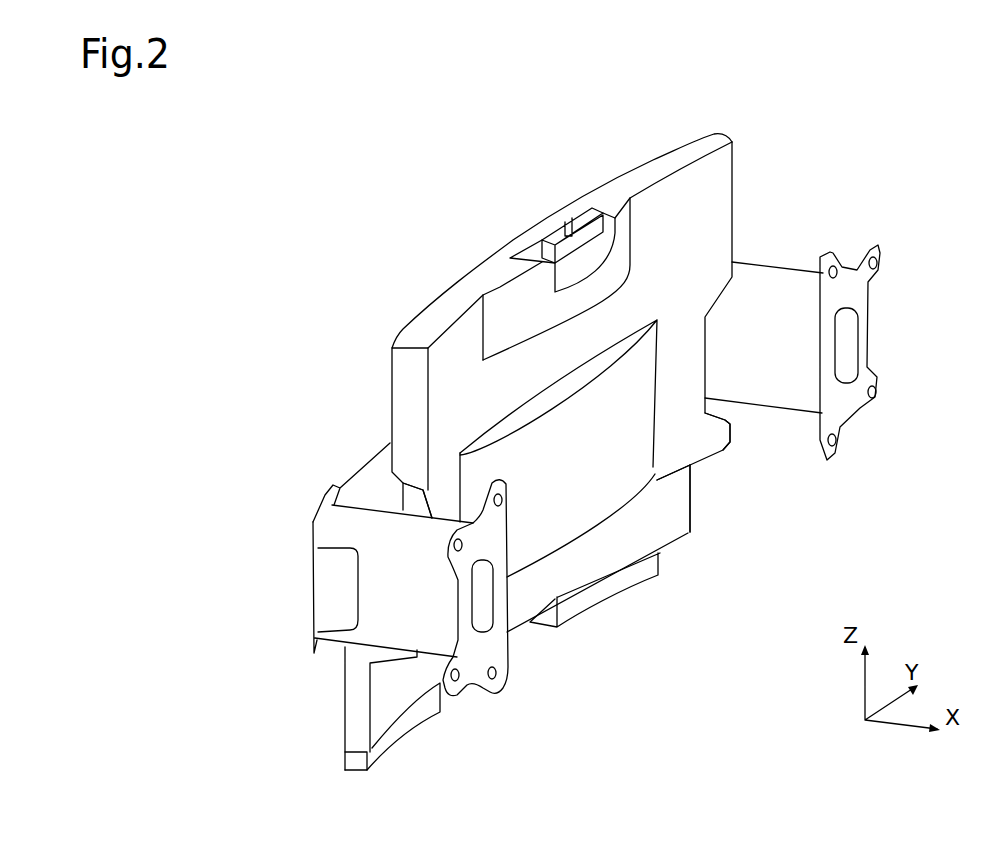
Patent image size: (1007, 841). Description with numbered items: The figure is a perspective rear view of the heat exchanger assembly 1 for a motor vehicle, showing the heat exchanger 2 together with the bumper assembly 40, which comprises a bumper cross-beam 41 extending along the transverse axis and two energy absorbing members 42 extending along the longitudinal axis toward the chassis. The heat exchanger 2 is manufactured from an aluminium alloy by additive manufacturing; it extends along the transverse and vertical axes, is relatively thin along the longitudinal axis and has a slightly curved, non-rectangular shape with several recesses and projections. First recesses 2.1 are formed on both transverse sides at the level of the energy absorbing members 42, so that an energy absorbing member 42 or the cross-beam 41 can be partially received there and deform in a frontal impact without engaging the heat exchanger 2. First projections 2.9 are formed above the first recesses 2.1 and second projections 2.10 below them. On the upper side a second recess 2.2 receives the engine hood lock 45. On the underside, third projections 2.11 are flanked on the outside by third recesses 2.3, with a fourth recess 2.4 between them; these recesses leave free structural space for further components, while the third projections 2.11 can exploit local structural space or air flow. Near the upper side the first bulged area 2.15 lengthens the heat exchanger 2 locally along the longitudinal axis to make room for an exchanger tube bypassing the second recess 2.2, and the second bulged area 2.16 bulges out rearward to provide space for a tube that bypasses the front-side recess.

The heat exchanger assembly 1 is at (828, 167).
The heat exchanger 2 is at (653, 160).
The first recess 2.1 is at (727, 340).
The second recess 2.2 is at (533, 250).
The third recess 2.3 is at (668, 556).
The fourth recess 2.4 is at (515, 650).
The first projection 2.9 is at (380, 385).
The second projection 2.10 is at (730, 461).
The third projection 2.11 is at (585, 612).
The first bulged area 2.15 is at (630, 260).
The second bulged area 2.16 is at (633, 382).
The bumper assembly 40 is at (248, 503).
The bumper cross-beam 41 is at (373, 463).
The energy absorbing member 42 is at (365, 587).
The engine hood lock 45 is at (590, 210).